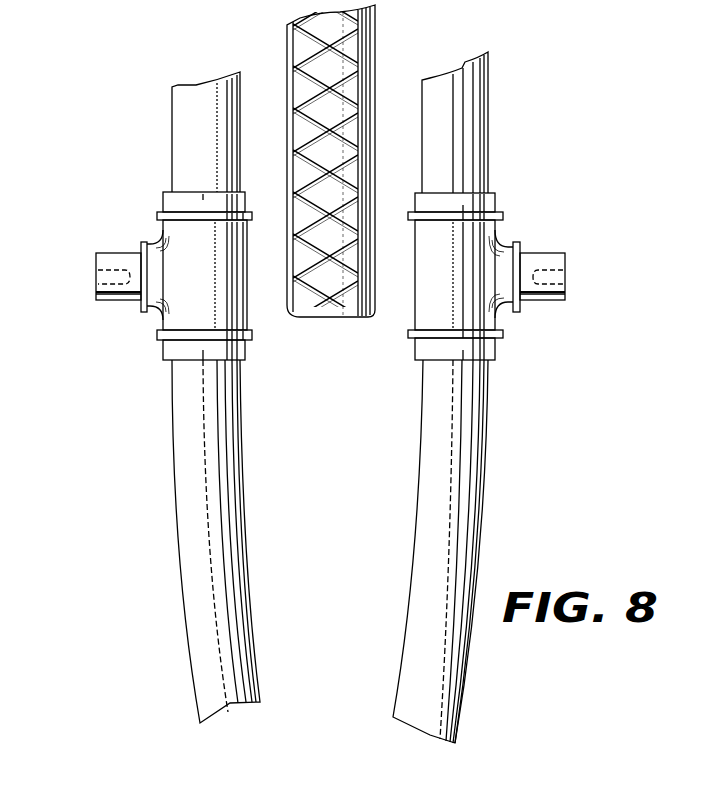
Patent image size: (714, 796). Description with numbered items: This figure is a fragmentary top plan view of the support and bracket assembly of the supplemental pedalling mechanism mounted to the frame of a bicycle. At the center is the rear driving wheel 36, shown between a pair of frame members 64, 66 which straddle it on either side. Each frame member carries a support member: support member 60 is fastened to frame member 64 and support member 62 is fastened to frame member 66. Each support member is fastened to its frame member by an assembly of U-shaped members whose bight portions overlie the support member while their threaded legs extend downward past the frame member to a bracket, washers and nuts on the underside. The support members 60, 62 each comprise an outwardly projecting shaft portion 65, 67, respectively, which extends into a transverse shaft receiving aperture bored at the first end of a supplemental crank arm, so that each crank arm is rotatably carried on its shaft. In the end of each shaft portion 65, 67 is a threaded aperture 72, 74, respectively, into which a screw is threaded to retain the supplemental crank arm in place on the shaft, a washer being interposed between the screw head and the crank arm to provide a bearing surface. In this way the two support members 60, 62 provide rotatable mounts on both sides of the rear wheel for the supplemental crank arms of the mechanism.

The rear driving wheel 36 is at (376, 31).
The support member 60 is at (163, 236).
The support member 62 is at (500, 232).
The frame member 64 is at (172, 483).
The frame member 66 is at (488, 505).
The shaft portion 65 is at (118, 302).
The shaft portion 67 is at (548, 301).
The threaded aperture 72 is at (95, 272).
The threaded aperture 74 is at (568, 272).